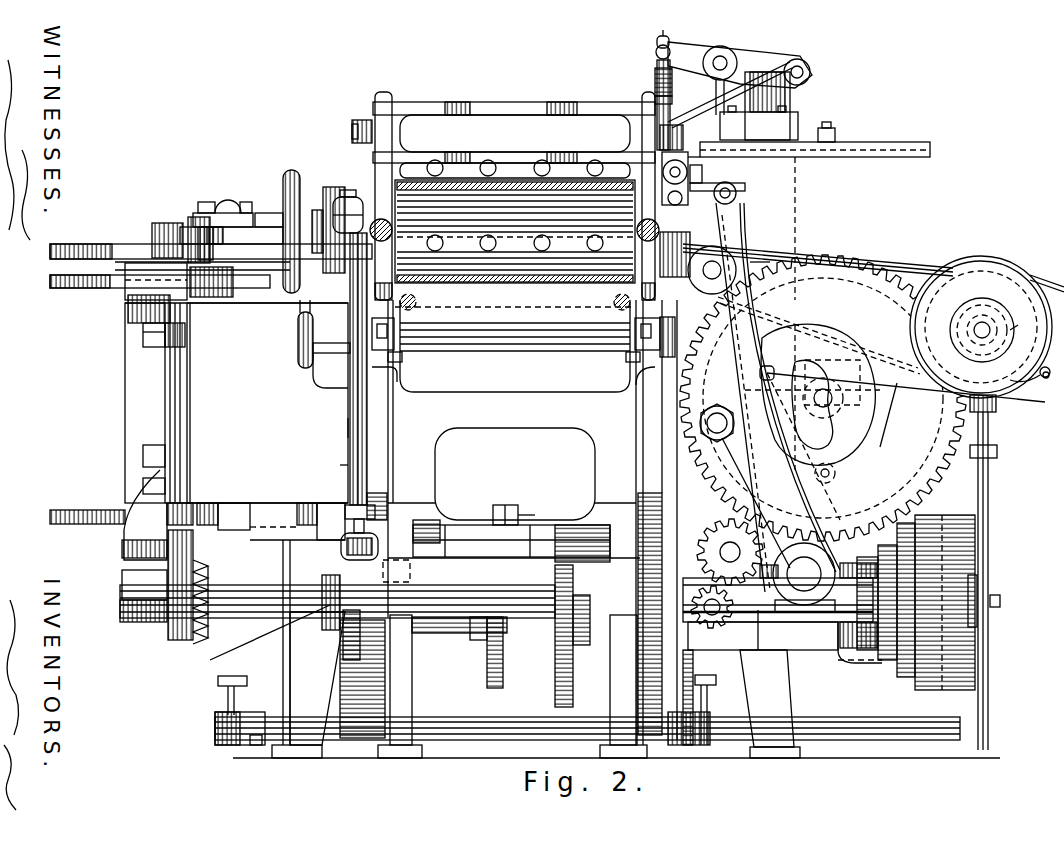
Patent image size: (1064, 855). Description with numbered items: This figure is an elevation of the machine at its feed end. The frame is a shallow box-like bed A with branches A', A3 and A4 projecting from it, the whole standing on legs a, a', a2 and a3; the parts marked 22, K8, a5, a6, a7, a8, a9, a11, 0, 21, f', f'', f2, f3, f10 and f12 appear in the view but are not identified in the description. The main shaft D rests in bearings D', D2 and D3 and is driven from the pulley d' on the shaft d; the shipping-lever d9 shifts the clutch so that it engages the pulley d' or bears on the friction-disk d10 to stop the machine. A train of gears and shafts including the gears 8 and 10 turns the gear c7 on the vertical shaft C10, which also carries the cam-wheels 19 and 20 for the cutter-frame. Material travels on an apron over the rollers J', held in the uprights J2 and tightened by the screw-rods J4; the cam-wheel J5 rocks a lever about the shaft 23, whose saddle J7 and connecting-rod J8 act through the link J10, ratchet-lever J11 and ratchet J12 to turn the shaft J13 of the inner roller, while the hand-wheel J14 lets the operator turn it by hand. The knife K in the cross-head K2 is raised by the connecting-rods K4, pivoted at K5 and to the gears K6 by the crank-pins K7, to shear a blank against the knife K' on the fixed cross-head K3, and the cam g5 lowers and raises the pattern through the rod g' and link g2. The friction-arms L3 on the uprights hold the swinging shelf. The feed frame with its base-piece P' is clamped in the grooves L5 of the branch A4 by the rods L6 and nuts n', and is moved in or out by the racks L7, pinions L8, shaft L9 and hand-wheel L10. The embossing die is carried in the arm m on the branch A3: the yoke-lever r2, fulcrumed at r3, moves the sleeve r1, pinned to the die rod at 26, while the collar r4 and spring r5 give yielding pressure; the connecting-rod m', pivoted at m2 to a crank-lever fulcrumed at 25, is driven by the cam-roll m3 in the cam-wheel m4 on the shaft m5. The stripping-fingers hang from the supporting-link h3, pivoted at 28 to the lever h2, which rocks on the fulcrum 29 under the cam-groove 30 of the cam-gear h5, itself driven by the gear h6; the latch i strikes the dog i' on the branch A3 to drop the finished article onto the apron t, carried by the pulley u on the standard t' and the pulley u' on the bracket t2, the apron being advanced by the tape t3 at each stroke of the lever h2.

The cam-wheel 19 is at (100, 250).
The cam-wheel 20 is at (92, 288).
The frame post 22 is at (236, 399).
The gear 8 is at (167, 522).
The gear 10 is at (185, 575).
The shaft 23 is at (582, 554).
The fulcrum 25 is at (838, 434).
The pin 26 is at (670, 38).
The pivot 28 is at (736, 195).
The fulcrum 29 is at (804, 577).
The cam-groove 30 is at (812, 412).
The bed A is at (512, 429).
The branch A' is at (279, 458).
The branch A3 is at (797, 190).
The branch A4 is at (402, 360).
The vertical shaft C10 is at (165, 226).
The main shaft D is at (337, 612).
The bearing D' is at (254, 641).
The bearing D2 is at (122, 585).
The bearing D3 is at (757, 575).
The roller J' is at (515, 231).
The upright J2 is at (372, 112).
The screw-rod J4 is at (300, 300).
The cam-wheel J5 is at (556, 680).
The saddle J7 is at (330, 575).
The connecting-rod J8 is at (328, 463).
The link J10 is at (360, 233).
The ratchet-lever J11 is at (352, 197).
The ratchet J12 is at (335, 187).
The shaft J13 is at (318, 210).
The hand-wheel J14 is at (293, 219).
The blank-cutting knife K is at (515, 154).
The blank-cutting knife K' is at (652, 522).
The cross-head K2 is at (343, 640).
The fixed cross-head K3 is at (500, 148).
The connecting-rod K4 is at (656, 522).
The pivot K5 is at (683, 249).
The gear K6 is at (645, 672).
The crank-pin K7 is at (348, 425).
The gear K8 is at (460, 633).
The friction-arm L3 is at (680, 128).
The inverted-T groove L5 is at (390, 382).
The rod L6 is at (395, 330).
The rack L7 is at (683, 326).
The pinion L8 is at (320, 343).
The shaft L9 is at (522, 352).
The hand-wheel L10 is at (305, 336).
The base-piece P' is at (513, 303).
The leg a is at (308, 649).
The leg a' is at (400, 686).
The leg a2 is at (618, 698).
The leg a3 is at (770, 704).
The bar a5 is at (510, 738).
The handle a6 is at (228, 698).
The gear a7 is at (688, 770).
The lever a8 is at (688, 660).
The rod a9 is at (758, 610).
The gear a11 is at (880, 660).
The gear c7 is at (90, 510).
The shaft d is at (780, 632).
The driving-pulley d' is at (970, 599).
The shipping-lever d9 is at (888, 660).
The friction-disk d10 is at (915, 680).
The rail f' is at (193, 271).
The cap f'' is at (234, 224).
The gear f2 is at (200, 300).
The block f3 is at (128, 300).
The bracket f10 is at (250, 213).
The bar f12 is at (268, 214).
The vertical rod g' is at (488, 505).
The link g2 is at (537, 510).
The cam g5 is at (487, 672).
The lever h2 is at (746, 230).
The supporting-link h3 is at (745, 187).
The cam-gear h5 is at (823, 398).
The gear h6 is at (731, 562).
The latch i is at (692, 178).
The dog i' is at (815, 139).
The arm m is at (781, 106).
The connecting-rod m' is at (730, 95).
The pivot m2 is at (720, 485).
The cam-roll m3 is at (788, 396).
The cam-wheel m4 is at (834, 446).
The shaft m5 is at (906, 392).
The nut n' is at (514, 185).
The sleeve r1 is at (657, 50).
The yoke-lever r2 is at (740, 78).
The fulcrum r3 is at (811, 72).
The collar r4 is at (670, 96).
The spring r5 is at (662, 80).
The apron t is at (873, 334).
The standard t' is at (1000, 572).
The bracket t2 is at (770, 262).
The tape t3 is at (906, 415).
The pulley u is at (981, 321).
The pulley u' is at (1030, 389).
The pin 0 is at (955, 326).
The pin 21 is at (1024, 325).